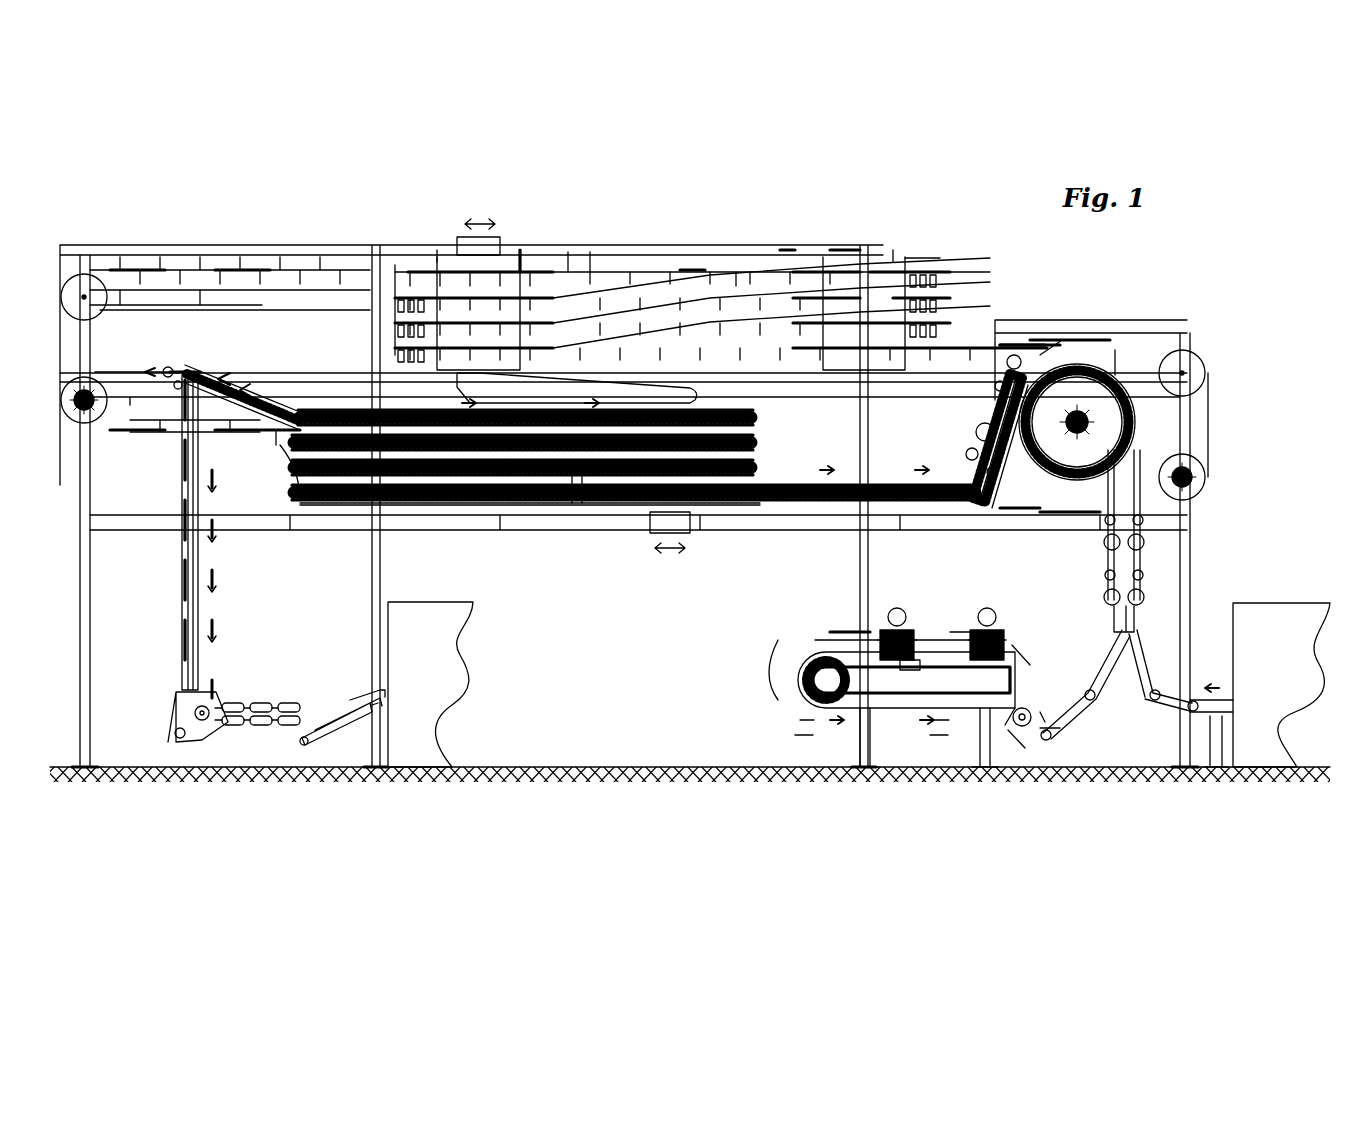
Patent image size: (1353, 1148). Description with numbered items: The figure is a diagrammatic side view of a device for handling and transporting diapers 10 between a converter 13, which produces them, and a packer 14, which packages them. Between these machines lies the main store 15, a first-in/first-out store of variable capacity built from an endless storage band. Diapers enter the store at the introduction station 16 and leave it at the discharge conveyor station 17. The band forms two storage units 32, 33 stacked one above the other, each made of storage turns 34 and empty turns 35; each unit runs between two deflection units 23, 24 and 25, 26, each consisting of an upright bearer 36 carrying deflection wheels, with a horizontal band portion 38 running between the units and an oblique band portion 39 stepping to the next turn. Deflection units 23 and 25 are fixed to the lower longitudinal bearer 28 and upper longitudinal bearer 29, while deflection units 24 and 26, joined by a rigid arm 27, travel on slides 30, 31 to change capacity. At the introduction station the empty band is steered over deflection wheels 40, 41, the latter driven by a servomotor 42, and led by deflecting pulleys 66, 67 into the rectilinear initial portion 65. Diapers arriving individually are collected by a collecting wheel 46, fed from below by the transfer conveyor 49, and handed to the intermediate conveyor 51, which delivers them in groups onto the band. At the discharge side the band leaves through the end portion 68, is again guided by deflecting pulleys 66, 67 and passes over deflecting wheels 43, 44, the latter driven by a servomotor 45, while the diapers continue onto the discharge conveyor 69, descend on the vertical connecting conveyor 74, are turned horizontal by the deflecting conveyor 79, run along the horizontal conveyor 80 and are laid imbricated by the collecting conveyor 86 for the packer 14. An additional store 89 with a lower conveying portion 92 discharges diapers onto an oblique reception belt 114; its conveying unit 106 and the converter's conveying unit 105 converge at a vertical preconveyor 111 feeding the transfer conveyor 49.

The diaper 10 is at (188, 580).
The converter 13 is at (1255, 605).
The packer 14 is at (413, 748).
The main store 15 is at (794, 193).
The introduction station 16 is at (1117, 303).
The discharge conveyor station 17 is at (273, 330).
The deflection unit 23 is at (349, 514).
The deflection unit 24 is at (639, 516).
The deflection unit 25 is at (908, 258).
The deflection unit 26 is at (520, 250).
The arm 27 is at (610, 385).
The lower longitudinal bearer 28 is at (550, 520).
The upper longitudinal bearer 29 is at (838, 250).
The slide 30 is at (675, 525).
The slide 31 is at (463, 250).
The storage unit 32 is at (516, 521).
The storage unit 33 is at (736, 255).
The storage turn 34 is at (490, 490).
The empty turn 35 is at (702, 250).
The bearer 36 is at (893, 250).
The band portion 38 is at (582, 502).
The band portion 39 is at (790, 250).
The deflection wheel 40 is at (1197, 365).
The deflection wheel 41 is at (1202, 462).
The servomotor 42 is at (1200, 478).
The deflecting wheel 43 is at (70, 288).
The deflecting wheel 44 is at (72, 410).
The servomotor 45 is at (90, 412).
The collecting wheel 46 is at (1067, 335).
The transfer conveyor 49 is at (1150, 505).
The intermediate conveyor 51 is at (946, 452).
The initial portion 65 is at (833, 521).
The deflecting pulley 66 is at (1095, 500).
The deflecting pulley 67 is at (1010, 508).
The end portion 68 is at (278, 440).
The discharge conveyor 69 is at (290, 382).
The connecting conveyor 74 is at (160, 570).
The deflecting conveyor 79 is at (202, 772).
The horizontal conveyor 80 is at (256, 776).
The collecting conveyor 86 is at (342, 742).
The additional store 89 is at (794, 733).
The lower conveying portion 92 is at (953, 690).
The conveying unit 105 is at (1153, 728).
The conveying unit 106 is at (1098, 729).
The preconveyor 111 is at (1130, 608).
The reception belt 114 is at (1030, 725).